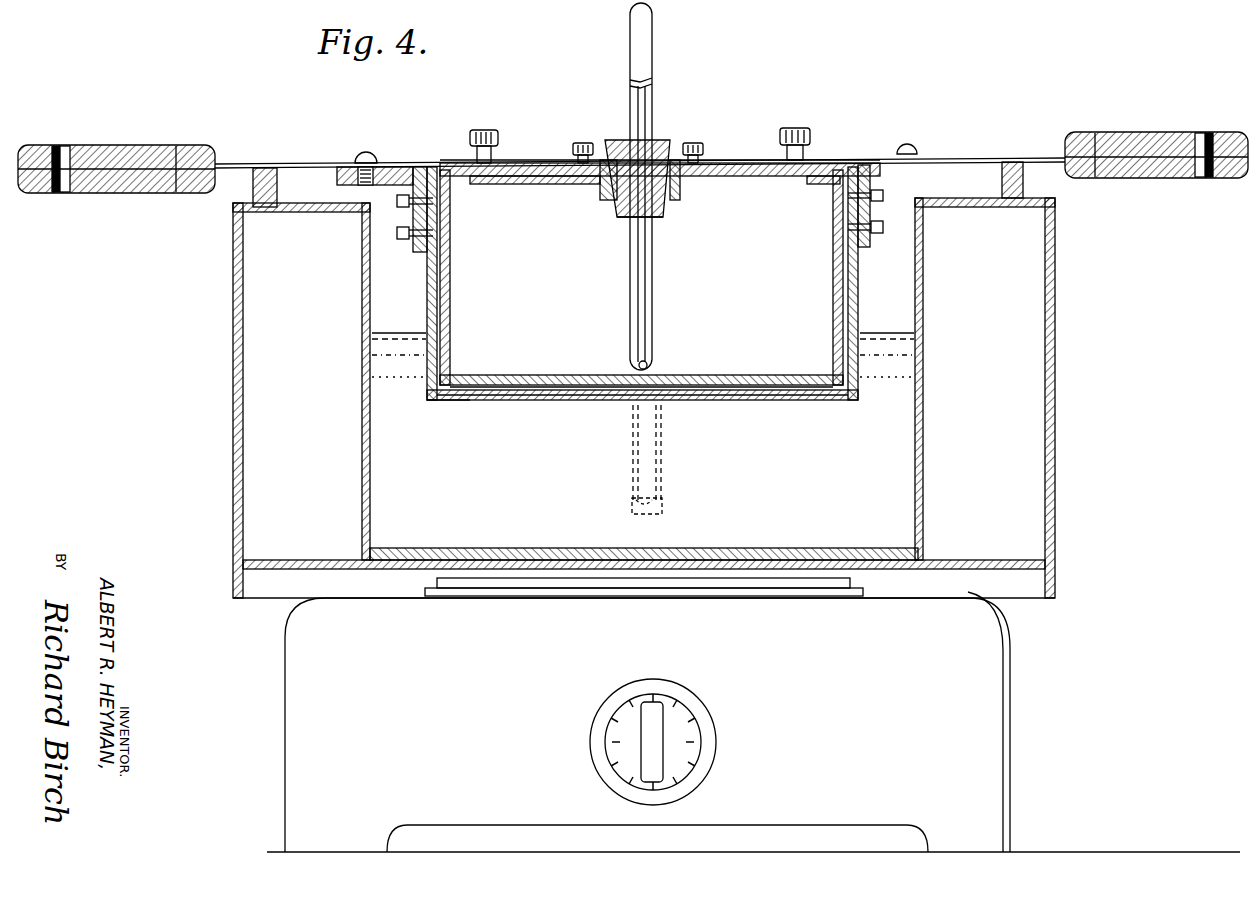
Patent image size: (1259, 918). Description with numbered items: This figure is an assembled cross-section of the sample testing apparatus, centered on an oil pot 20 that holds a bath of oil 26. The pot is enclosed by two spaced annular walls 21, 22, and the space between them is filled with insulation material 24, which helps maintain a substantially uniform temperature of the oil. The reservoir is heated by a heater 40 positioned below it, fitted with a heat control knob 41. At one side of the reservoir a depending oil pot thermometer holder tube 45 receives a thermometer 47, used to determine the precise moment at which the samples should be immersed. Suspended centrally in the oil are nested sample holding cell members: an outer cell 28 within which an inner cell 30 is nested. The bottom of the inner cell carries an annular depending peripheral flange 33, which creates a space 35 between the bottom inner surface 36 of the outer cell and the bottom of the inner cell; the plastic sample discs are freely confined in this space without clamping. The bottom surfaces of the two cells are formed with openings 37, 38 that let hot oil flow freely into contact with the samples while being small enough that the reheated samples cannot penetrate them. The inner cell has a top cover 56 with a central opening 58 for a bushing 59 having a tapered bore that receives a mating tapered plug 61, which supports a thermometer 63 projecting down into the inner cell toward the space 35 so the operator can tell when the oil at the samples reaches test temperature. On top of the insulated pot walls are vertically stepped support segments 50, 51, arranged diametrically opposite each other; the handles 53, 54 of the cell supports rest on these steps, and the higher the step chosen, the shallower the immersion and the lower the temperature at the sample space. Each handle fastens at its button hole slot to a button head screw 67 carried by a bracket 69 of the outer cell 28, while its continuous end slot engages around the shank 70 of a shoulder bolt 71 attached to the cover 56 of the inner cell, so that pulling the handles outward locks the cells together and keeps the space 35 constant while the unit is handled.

The oil pot 20 is at (1057, 474).
The annular spaced wall 21 is at (371, 489).
The annular spaced wall 22 is at (915, 462).
The insulation material 24 is at (258, 447).
The oil 26 is at (386, 331).
The outer cell 28 is at (858, 302).
The inner cell 30 is at (832, 303).
The annular depending peripheral flange 33 is at (437, 400).
The space 35 is at (752, 400).
The bottom inner surface 36 is at (528, 375).
The opening 37 is at (540, 400).
The opening 38 is at (550, 372).
The heater 40 is at (988, 739).
The heat control knob 41 is at (685, 736).
The oil pot thermometer holder tube 45 is at (663, 479).
The thermometer 47 is at (650, 455).
The stepped support segment 50 is at (252, 187).
The stepped support segment 51 is at (1025, 182).
The handle 53 is at (233, 162).
The handle 54 is at (1015, 160).
The top cover 56 is at (782, 176).
The opening 58 is at (600, 178).
The bushing 59 is at (672, 188).
The tapered plug 61 is at (655, 218).
The thermometer 63 is at (655, 275).
The button head screw 67 is at (372, 158).
The bracket 69 is at (418, 168).
The shank 70 is at (497, 152).
The shoulder bolt 71 is at (487, 132).